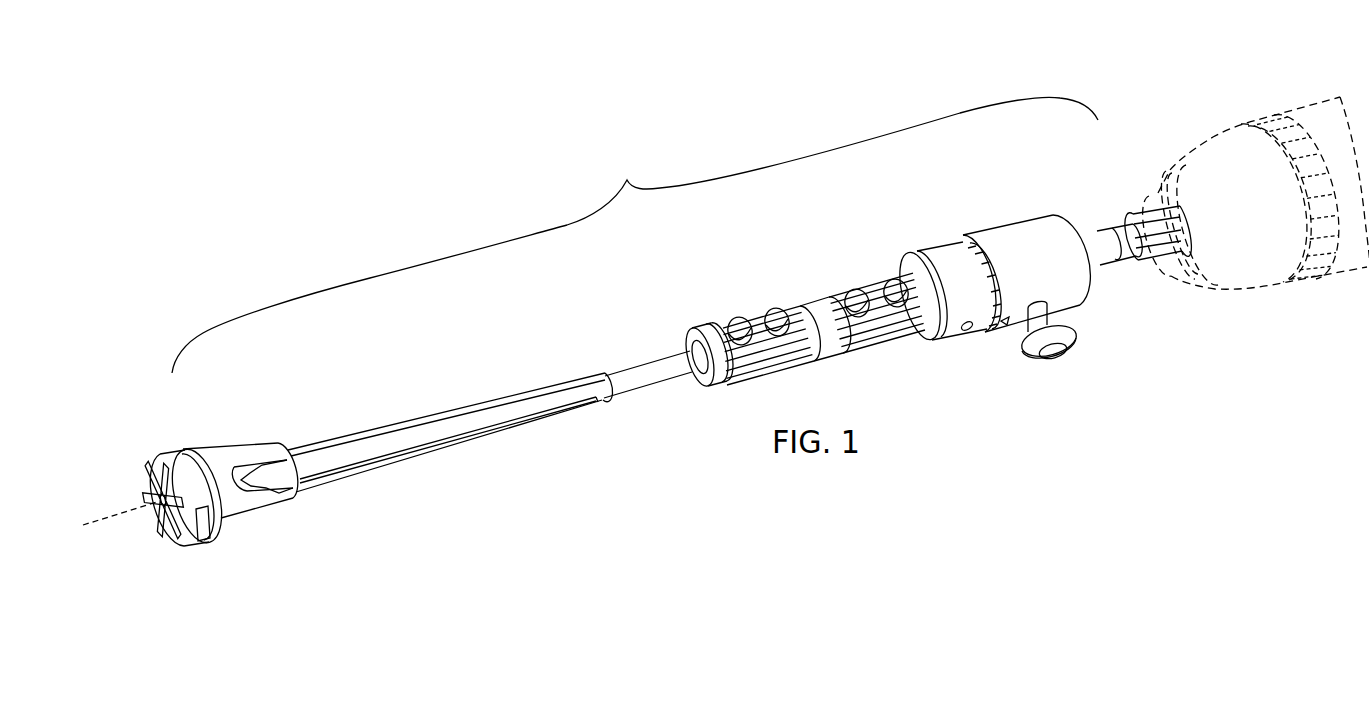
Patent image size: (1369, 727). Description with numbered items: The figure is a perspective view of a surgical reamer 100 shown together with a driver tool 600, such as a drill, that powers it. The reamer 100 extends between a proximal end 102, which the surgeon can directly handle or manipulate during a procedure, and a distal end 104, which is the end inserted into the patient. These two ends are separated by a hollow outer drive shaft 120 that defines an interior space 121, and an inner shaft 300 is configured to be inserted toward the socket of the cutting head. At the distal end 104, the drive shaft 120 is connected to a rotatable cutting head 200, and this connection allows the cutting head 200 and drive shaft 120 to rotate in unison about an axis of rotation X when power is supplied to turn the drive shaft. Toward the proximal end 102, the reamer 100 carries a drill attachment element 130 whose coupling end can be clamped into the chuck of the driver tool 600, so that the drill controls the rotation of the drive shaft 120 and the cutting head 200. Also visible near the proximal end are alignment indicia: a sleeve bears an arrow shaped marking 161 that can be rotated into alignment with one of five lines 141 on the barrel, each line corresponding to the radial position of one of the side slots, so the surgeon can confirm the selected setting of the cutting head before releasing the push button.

The reamer 100 is at (635, 235).
The proximal end 102 is at (1097, 290).
The distal end 104 is at (212, 526).
The drive shaft 120 is at (634, 396).
The interior space 121 is at (520, 423).
The drill attachment element 130 is at (1146, 212).
The lines 141 is at (962, 250).
The arrow shaped marking 161 is at (1008, 323).
The cutting head 200 is at (218, 448).
The inner shaft 300 is at (397, 432).
The driver tool 600 is at (1215, 137).
The axis of rotation X is at (118, 516).